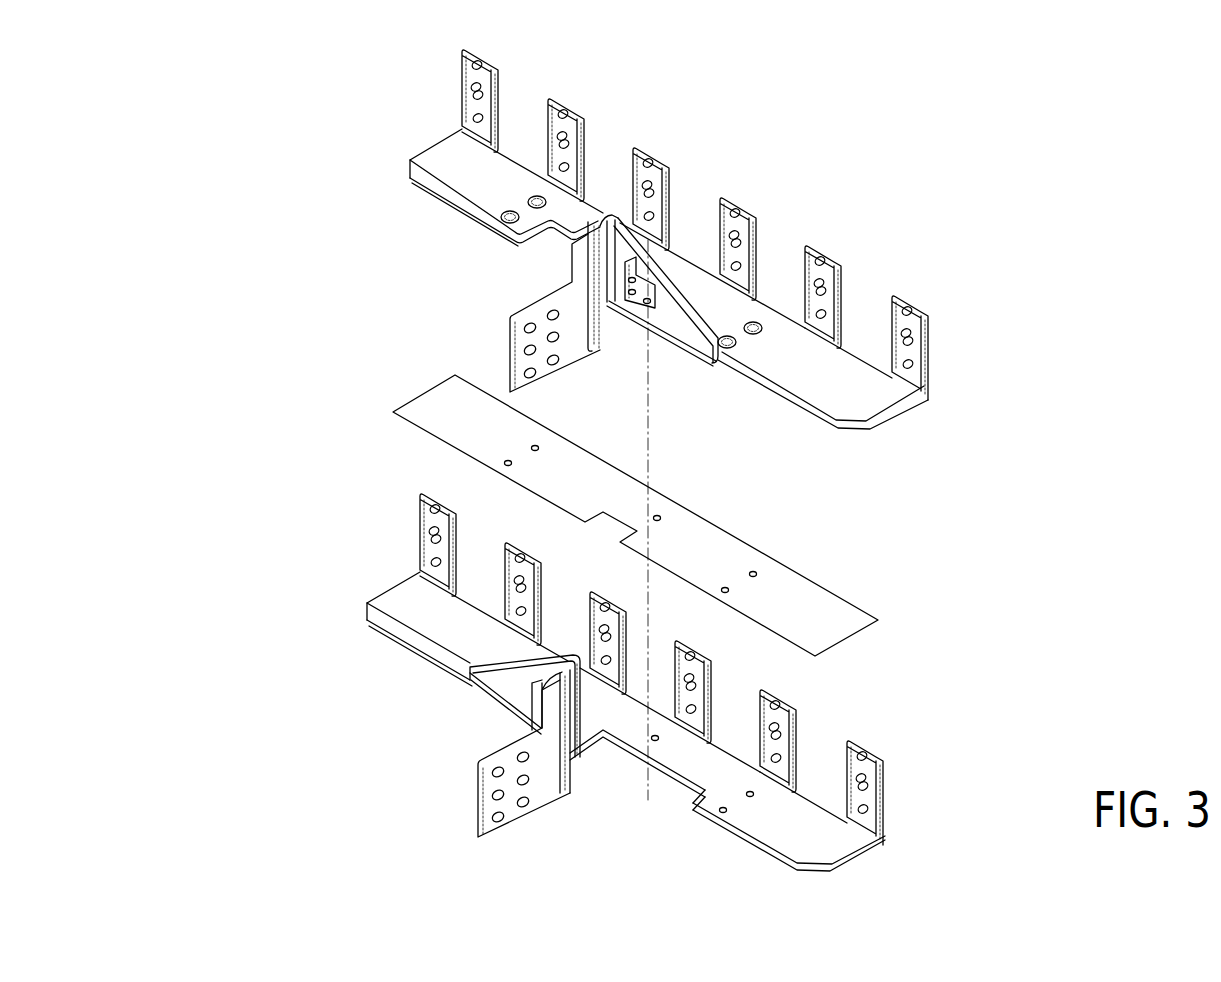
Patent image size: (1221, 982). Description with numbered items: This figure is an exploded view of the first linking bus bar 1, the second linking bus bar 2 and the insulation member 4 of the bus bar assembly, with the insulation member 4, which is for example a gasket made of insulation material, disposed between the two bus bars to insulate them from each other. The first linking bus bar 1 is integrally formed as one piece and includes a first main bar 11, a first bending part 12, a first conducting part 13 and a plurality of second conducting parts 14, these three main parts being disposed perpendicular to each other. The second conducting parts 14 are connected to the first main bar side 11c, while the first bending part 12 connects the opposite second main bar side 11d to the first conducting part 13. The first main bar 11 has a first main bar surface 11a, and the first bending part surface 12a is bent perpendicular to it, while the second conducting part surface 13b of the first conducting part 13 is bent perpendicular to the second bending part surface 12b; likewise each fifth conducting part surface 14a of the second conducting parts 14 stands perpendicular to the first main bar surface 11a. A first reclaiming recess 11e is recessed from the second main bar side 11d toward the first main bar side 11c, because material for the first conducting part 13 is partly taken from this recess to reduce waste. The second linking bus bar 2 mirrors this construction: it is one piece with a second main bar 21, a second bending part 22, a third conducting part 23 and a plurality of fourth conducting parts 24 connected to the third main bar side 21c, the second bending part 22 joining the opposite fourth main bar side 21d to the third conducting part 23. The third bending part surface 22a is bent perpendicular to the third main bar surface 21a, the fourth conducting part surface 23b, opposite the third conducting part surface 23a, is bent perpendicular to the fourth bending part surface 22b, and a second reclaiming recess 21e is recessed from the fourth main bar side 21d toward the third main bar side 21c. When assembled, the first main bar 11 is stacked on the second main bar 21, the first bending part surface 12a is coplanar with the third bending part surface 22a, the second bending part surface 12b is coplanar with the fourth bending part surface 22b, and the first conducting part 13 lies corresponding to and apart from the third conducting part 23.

The first linking bus bar 1 is at (949, 379).
The first main bar 11 is at (833, 400).
The first main bar surface 11a is at (725, 300).
The first main bar side 11c is at (858, 355).
The second main bar side 11d is at (820, 420).
The first reclaiming recess 11e is at (523, 256).
The first bending part 12 is at (700, 342).
The first bending part surface 12a is at (675, 275).
The second bending part surface 12b is at (683, 325).
The first conducting part 13 is at (542, 297).
The second conducting part surface 13b is at (578, 330).
The second conducting parts 14 is at (919, 291).
The fifth conducting part surface 14a is at (915, 332).
The insulation member 4 is at (428, 395).
The second linking bus bar 2 is at (903, 838).
The second main bar 21 is at (750, 830).
The third main bar surface 21a is at (398, 603).
The third main bar side 21c is at (815, 805).
The fourth main bar side 21d is at (396, 636).
The second reclaiming recess 21e is at (632, 787).
The second bending part 22 is at (500, 688).
The third bending part surface 22a is at (530, 652).
The fourth bending part surface 22b is at (515, 700).
The third conducting part 23 is at (461, 803).
The third conducting part surface 23a is at (540, 788).
The fourth conducting part surface 23b is at (473, 786).
The fourth conducting parts 24 is at (880, 727).